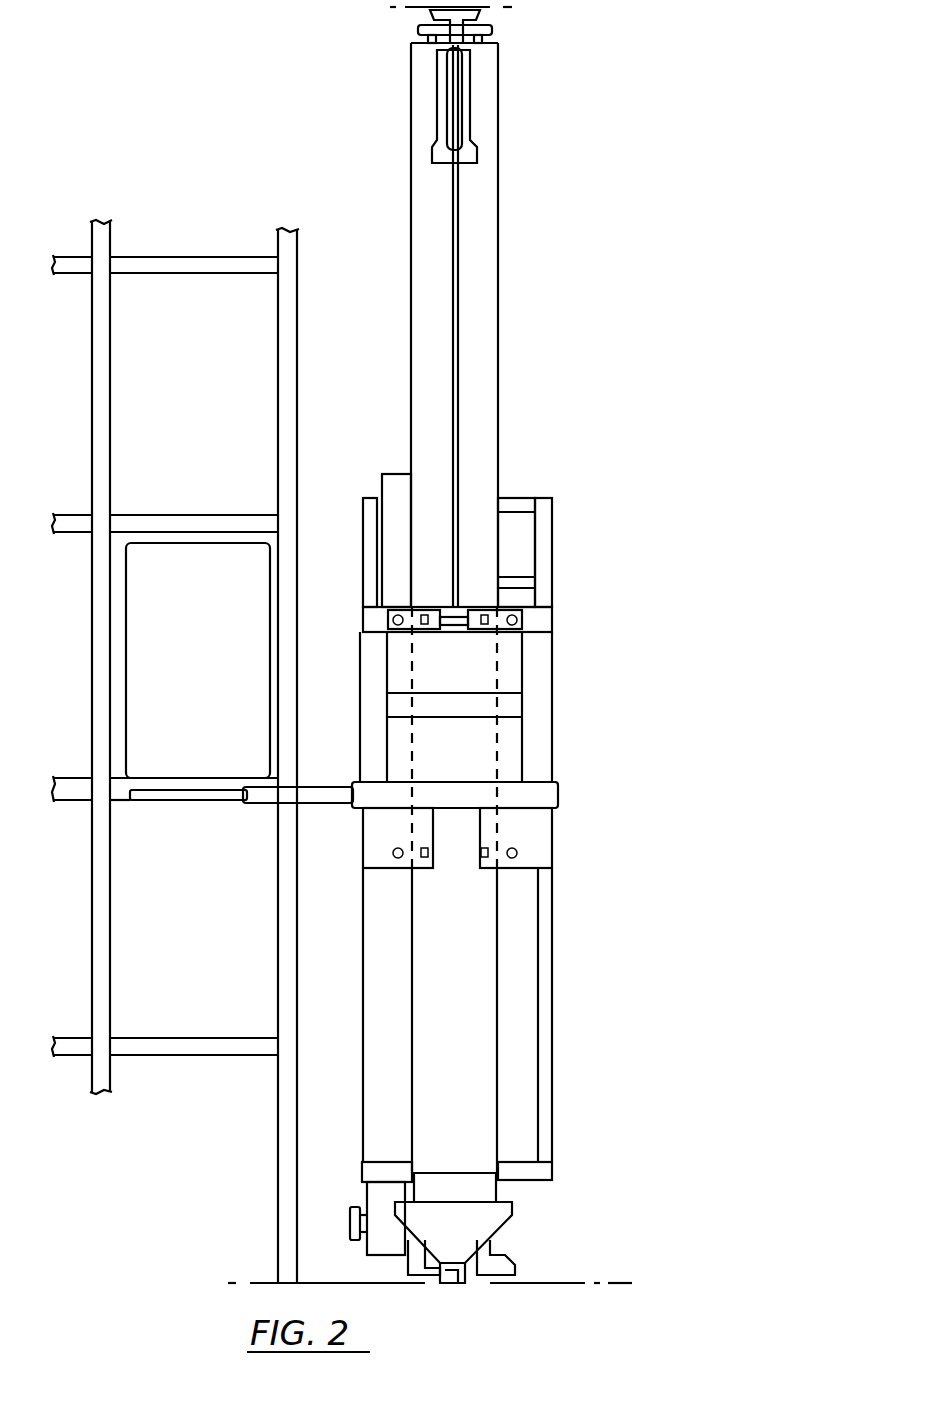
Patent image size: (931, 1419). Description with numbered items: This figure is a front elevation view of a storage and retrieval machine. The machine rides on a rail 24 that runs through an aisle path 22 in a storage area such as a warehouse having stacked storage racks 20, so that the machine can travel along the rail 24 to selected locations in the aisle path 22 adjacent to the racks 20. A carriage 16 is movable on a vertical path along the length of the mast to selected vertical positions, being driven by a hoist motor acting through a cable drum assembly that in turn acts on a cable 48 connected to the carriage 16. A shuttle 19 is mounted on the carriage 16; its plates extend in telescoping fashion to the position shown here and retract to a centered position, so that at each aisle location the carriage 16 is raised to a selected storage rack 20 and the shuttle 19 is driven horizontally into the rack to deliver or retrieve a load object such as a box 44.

The carriage 16 is at (482, 645).
The shuttle 19 is at (342, 764).
The stacked storage racks 20 is at (122, 797).
The aisle path 22 is at (312, 1097).
The rail 24 is at (512, 1240).
The box 44 is at (212, 605).
The cable 48 is at (458, 332).